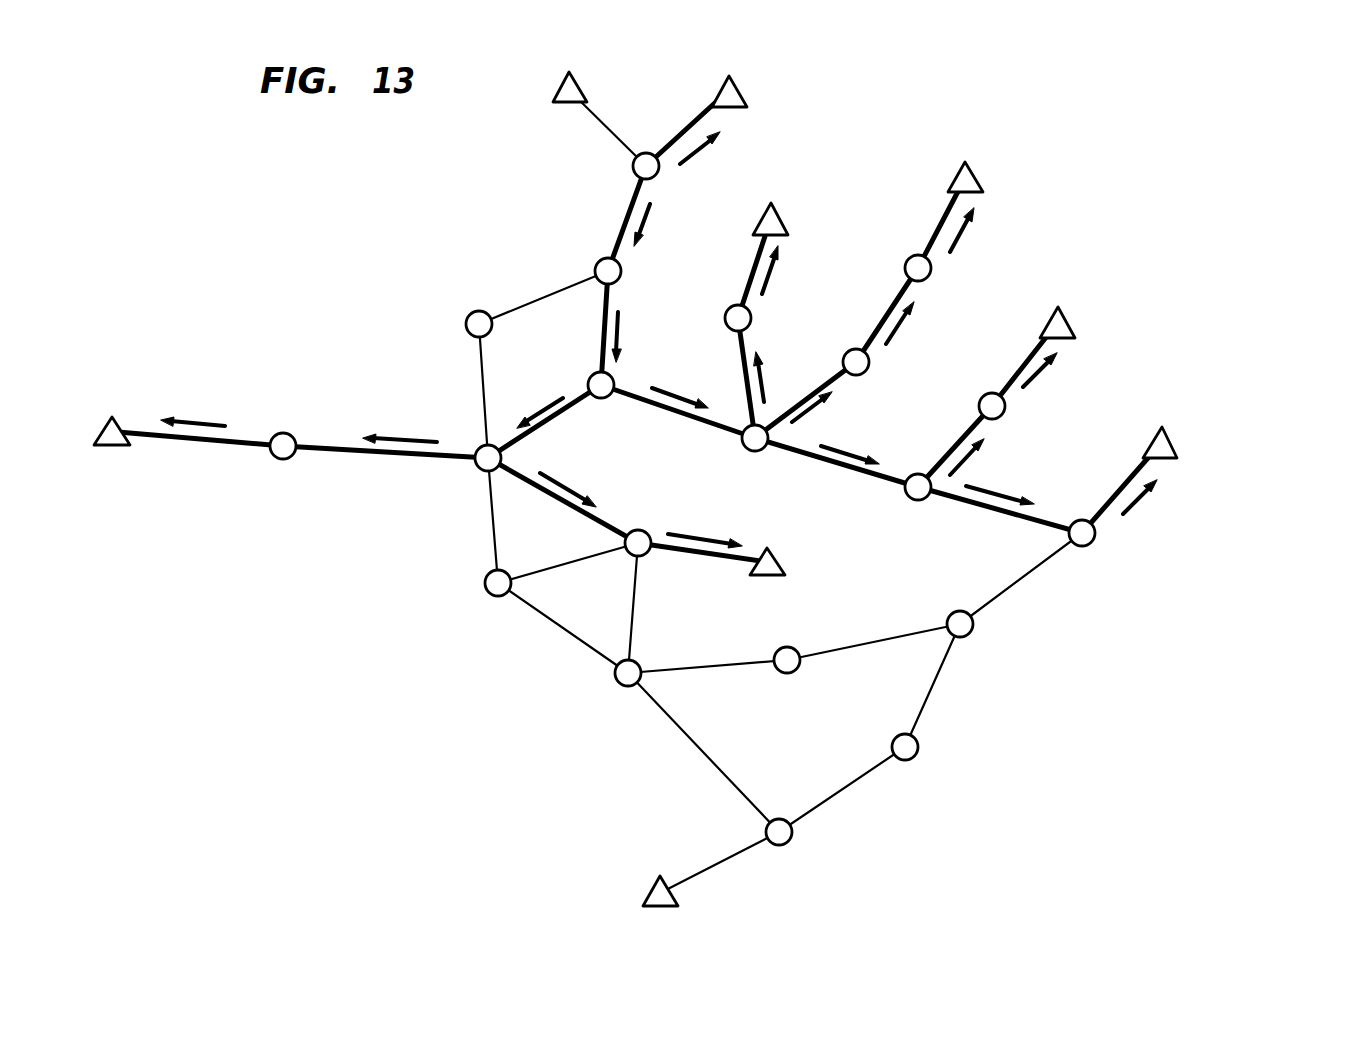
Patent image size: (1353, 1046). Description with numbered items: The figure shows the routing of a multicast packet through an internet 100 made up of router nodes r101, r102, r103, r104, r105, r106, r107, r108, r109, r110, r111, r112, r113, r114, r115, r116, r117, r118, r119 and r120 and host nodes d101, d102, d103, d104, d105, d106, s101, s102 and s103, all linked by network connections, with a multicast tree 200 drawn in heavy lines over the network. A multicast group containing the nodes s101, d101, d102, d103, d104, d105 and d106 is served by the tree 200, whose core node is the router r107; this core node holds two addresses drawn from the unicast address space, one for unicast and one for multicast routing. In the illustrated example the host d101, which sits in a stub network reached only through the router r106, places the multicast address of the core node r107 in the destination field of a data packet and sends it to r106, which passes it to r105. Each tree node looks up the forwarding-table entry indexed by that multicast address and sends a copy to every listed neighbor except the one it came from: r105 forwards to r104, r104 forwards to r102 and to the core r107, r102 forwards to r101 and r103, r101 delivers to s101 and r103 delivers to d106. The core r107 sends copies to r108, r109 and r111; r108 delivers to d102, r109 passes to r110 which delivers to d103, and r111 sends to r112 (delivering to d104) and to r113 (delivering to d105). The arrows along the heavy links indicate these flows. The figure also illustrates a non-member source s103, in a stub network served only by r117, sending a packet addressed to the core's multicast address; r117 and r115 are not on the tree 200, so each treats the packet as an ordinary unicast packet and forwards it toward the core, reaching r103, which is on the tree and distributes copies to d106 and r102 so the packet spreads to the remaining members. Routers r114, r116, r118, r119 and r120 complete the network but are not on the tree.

The internet 100 is at (316, 240).
The multicast tree 200 is at (537, 266).
The host node s101 is at (118, 448).
The host node s102 is at (585, 95).
The host node s103 is at (648, 890).
The host node d101 is at (744, 100).
The host node d102 is at (784, 228).
The host node d103 is at (981, 187).
The host node d104 is at (1073, 332).
The host node d105 is at (1175, 450).
The host node d106 is at (775, 578).
The router node r101 is at (284, 459).
The router node r102 is at (478, 466).
The router node r103 is at (648, 552).
The router node r104 is at (606, 397).
The router node r105 is at (618, 280).
The router node r106 is at (657, 177).
The core node r107 is at (761, 450).
The router node r108 is at (751, 317).
The router node r109 is at (860, 375).
The router node r110 is at (932, 277).
The router node r111 is at (918, 500).
The router node r112 is at (1005, 411).
The router node r113 is at (1094, 543).
The router node r114 is at (486, 591).
The router node r115 is at (616, 684).
The router node r116 is at (793, 673).
The router node r117 is at (787, 844).
The router node r118 is at (917, 750).
The router node r119 is at (972, 630).
The router node r120 is at (468, 331).